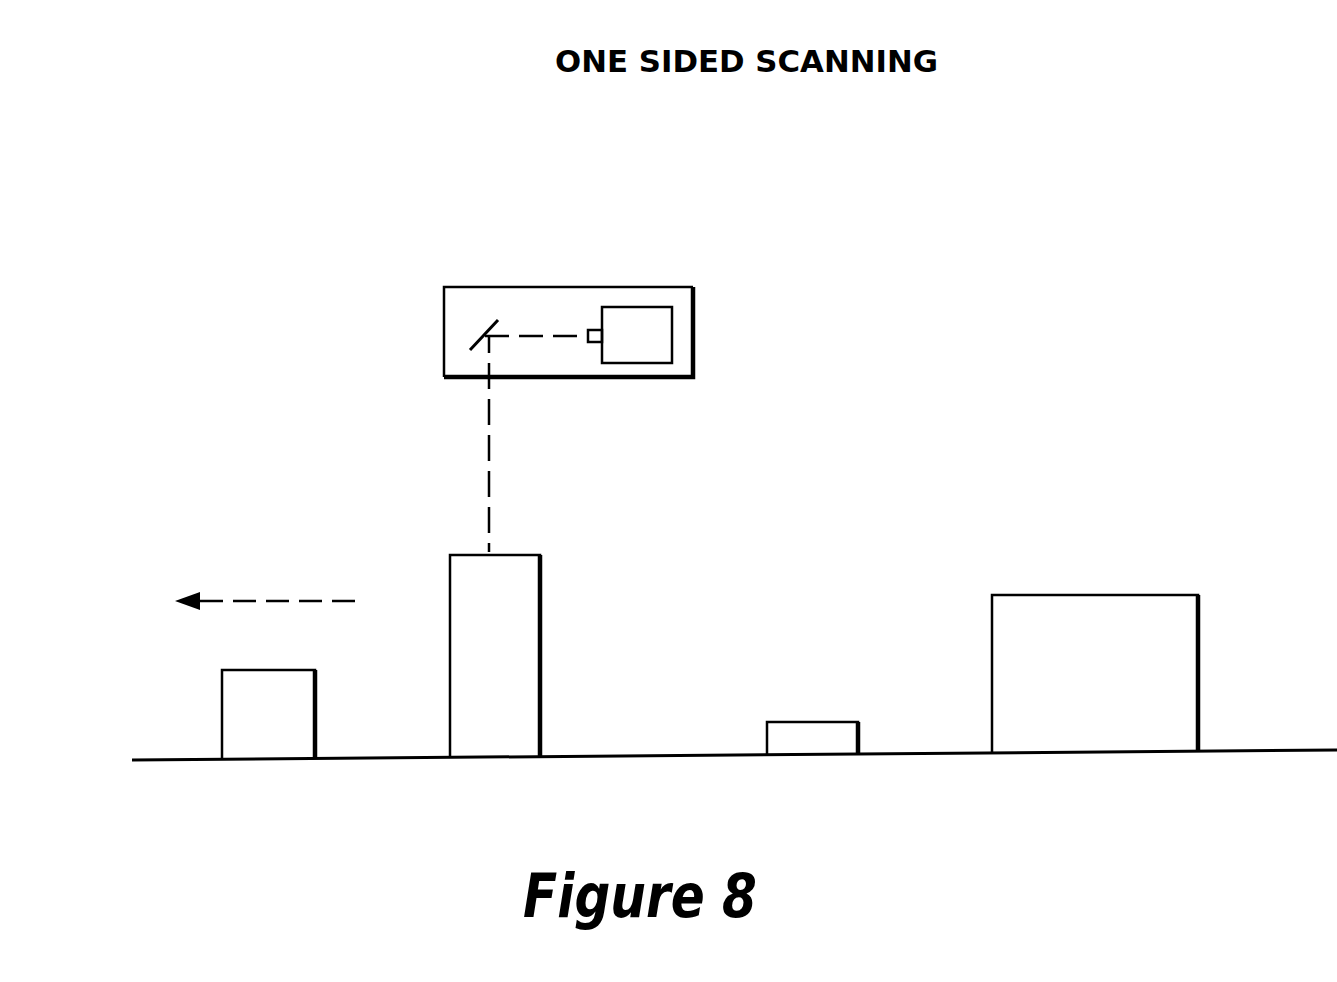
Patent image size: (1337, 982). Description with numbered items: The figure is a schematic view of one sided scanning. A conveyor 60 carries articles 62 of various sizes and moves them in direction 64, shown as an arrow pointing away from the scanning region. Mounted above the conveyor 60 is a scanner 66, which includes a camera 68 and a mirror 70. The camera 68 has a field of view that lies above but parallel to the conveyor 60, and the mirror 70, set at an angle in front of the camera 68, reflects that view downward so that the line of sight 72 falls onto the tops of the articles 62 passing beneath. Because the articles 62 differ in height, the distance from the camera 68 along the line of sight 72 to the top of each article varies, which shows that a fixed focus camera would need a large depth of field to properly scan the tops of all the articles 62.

The conveyor 60 is at (1262, 753).
The articles 62 is at (992, 662).
The direction 64 is at (245, 598).
The scanner 66 is at (653, 285).
The camera 68 is at (647, 342).
The mirror 70 is at (480, 337).
The line of sight 72 is at (542, 335).